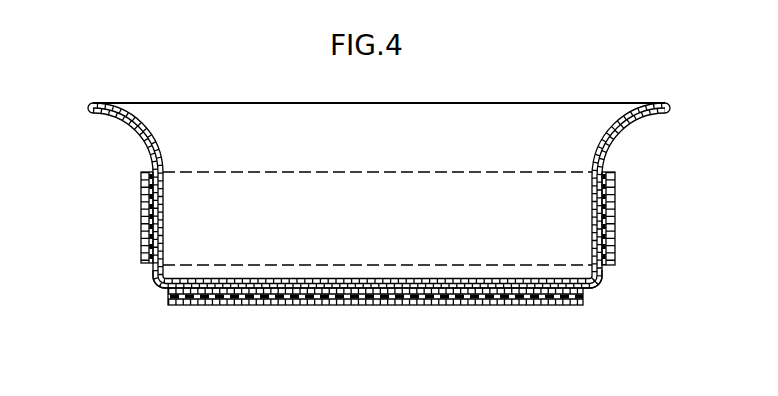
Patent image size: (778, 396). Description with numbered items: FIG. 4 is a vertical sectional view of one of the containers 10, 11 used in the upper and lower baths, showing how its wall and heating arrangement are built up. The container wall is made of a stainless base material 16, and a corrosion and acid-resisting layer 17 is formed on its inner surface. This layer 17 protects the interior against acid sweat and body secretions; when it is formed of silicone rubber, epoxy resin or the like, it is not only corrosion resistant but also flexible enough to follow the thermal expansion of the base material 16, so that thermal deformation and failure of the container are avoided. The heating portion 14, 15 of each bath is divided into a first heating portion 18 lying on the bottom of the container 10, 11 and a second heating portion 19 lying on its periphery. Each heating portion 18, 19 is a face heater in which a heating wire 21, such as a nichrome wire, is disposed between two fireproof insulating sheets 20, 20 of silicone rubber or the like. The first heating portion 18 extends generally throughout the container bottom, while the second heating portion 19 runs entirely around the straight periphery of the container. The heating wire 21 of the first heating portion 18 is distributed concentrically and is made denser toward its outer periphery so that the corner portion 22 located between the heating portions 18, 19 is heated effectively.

The container 10 is at (471, 103).
The container 11 is at (379, 177).
The heating portion 14 is at (575, 362).
The heating portion 15 is at (395, 336).
The stainless base material 16 is at (606, 163).
The corrosion and acid-resisting layer 17 is at (611, 143).
The first heating portion 18 is at (552, 305).
The second heating portion 19 is at (621, 266).
The fireproof insulating sheet 20 is at (141, 180).
The heating wire 21 is at (146, 218).
The corner portion 22 is at (618, 267).